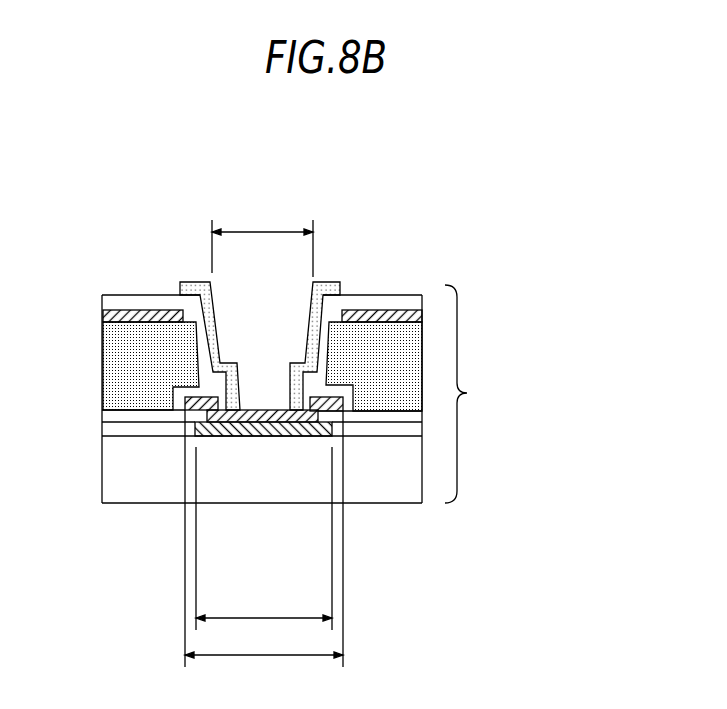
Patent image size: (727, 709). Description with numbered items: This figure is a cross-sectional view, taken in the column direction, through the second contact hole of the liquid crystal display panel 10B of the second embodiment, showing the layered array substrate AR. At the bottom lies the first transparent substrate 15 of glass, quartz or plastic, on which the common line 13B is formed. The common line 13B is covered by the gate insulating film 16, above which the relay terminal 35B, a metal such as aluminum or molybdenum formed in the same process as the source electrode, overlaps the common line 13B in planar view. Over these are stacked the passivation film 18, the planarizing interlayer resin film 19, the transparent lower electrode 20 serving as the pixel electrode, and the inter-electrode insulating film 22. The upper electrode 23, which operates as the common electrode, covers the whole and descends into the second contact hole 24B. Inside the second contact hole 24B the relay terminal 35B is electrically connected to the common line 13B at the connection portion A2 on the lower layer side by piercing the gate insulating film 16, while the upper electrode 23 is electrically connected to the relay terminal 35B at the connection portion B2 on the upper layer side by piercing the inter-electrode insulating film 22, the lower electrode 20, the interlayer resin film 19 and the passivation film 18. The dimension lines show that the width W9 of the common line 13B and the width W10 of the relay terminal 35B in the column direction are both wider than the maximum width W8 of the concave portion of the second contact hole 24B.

The liquid crystal display panel 10B is at (102, 153).
The first transparent substrate 15 is at (386, 465).
The gate insulating film 16 is at (158, 428).
The passivation film 18 is at (120, 417).
The interlayer resin film 19 is at (140, 357).
The lower electrode 20 is at (117, 305).
The inter-electrode insulating film 22 is at (402, 302).
The upper electrode 23 is at (186, 282).
The second contact hole 24B is at (266, 337).
The relay terminal 35B is at (187, 400).
The common line 13B is at (296, 432).
The connection portion B2 is at (248, 406).
The connection portion A2 is at (297, 420).
The array substrate AR is at (473, 394).
The maximum width of concave portion of second contact hole W8 is at (262, 240).
The width of common line W9 is at (264, 538).
The width of relay terminal W10 is at (264, 544).